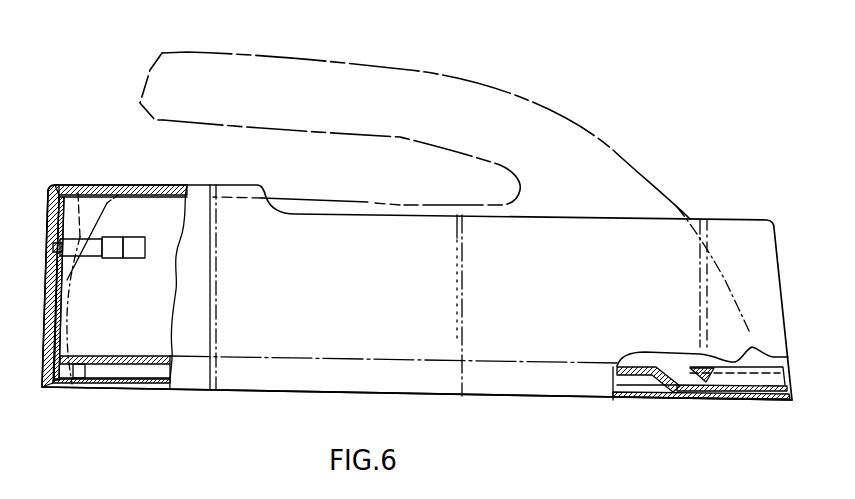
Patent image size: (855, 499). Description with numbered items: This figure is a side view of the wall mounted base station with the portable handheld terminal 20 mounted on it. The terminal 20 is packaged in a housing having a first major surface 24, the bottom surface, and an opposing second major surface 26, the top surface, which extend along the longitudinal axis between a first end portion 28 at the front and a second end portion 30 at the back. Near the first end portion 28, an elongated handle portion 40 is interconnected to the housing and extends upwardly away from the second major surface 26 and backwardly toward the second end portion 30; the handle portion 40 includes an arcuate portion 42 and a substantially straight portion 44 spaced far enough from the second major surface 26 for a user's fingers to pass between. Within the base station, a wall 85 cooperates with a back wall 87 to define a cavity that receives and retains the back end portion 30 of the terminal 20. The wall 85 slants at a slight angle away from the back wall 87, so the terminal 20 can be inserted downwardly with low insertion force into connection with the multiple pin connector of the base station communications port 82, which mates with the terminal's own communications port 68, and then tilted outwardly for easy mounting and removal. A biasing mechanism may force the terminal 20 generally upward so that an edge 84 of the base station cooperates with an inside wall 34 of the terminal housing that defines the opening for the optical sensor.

The portable handheld terminal 20 is at (508, 78).
The first major surface 24 is at (383, 361).
The second major surface 26 is at (366, 202).
The first end portion 28 is at (752, 334).
The second end portion 30 is at (70, 343).
The inside wall 34 is at (677, 381).
The handle portion 40 is at (385, 66).
The arcuate portion 42 is at (647, 177).
The substantially straight portion 44 is at (195, 52).
The communications port 68 is at (78, 193).
The communications port 82 is at (88, 252).
The edge 84 is at (760, 393).
The wall 85 is at (146, 185).
The back wall 87 is at (290, 394).